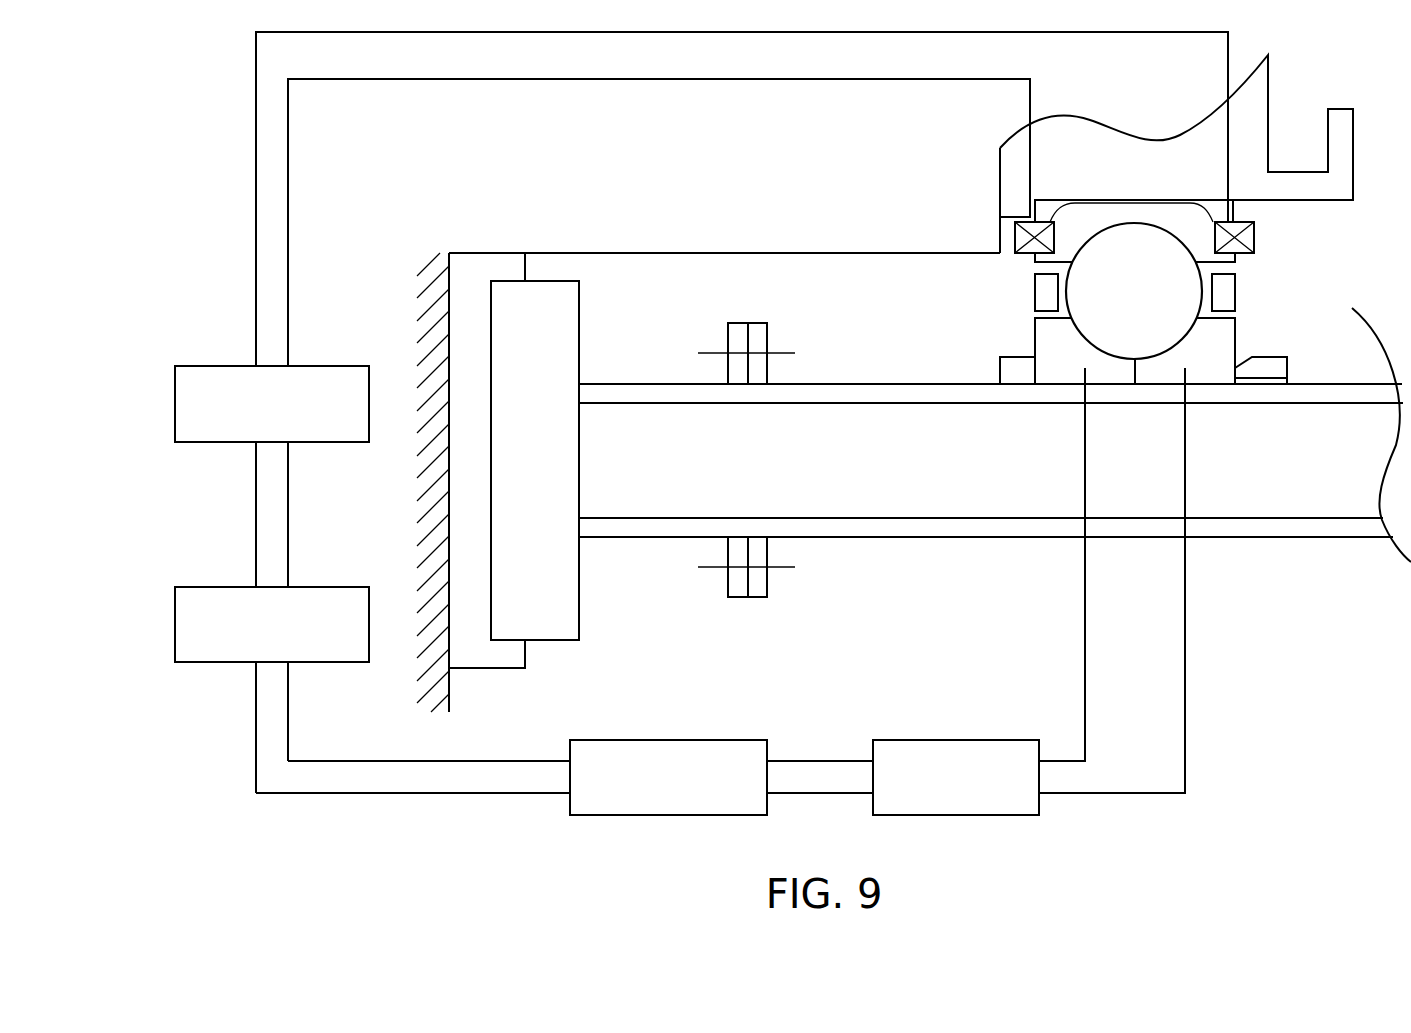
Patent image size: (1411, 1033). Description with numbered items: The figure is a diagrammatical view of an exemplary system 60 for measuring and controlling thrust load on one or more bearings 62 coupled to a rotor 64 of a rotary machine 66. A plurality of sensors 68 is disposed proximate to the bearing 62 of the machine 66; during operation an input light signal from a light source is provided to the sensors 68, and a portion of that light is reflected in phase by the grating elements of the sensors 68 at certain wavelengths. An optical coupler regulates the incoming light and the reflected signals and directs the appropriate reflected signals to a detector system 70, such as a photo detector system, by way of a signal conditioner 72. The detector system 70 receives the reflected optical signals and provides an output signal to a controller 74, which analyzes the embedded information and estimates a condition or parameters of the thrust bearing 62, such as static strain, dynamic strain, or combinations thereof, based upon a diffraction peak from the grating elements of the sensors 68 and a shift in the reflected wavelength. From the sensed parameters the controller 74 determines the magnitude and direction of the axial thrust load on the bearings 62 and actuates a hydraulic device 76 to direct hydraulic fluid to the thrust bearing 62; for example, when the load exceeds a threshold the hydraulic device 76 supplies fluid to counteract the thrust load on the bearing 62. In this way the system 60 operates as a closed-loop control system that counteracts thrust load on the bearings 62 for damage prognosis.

The system 60 is at (163, 632).
The bearing 62 is at (1176, 219).
The rotor 64 is at (1283, 510).
The rotary machine 66 is at (886, 378).
The sensors 68 is at (1098, 202).
The detector system 70 is at (190, 587).
The signal conditioner 72 is at (190, 366).
The controller 74 is at (668, 740).
The hydraulic device 76 is at (957, 740).